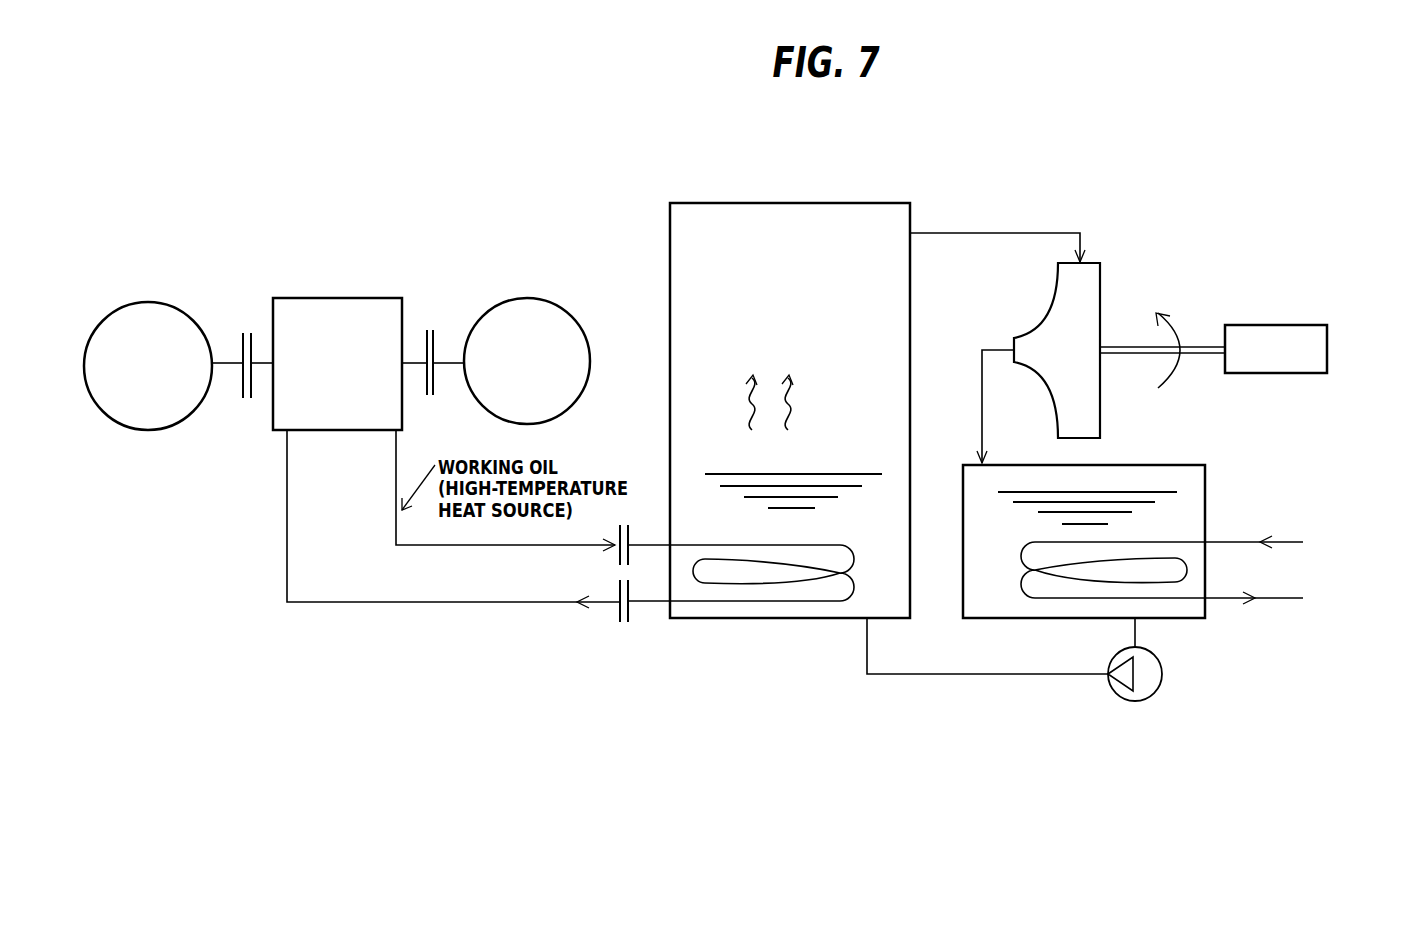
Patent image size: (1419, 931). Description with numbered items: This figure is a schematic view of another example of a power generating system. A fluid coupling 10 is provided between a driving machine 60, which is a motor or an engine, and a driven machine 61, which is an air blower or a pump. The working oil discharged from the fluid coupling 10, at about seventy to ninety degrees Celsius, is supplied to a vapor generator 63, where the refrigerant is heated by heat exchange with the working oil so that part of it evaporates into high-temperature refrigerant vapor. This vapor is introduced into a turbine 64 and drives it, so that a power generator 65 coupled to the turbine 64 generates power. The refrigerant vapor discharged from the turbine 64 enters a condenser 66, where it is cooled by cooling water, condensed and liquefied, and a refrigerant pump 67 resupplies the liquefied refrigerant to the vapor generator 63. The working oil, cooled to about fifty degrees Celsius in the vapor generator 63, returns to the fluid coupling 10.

The fluid coupling 10 is at (340, 297).
The driving machine 60 is at (527, 293).
The driven machine 61 is at (165, 432).
The vapor generator 63 is at (760, 203).
The turbine 64 is at (1100, 283).
The power generator 65 is at (1327, 350).
The condenser 66 is at (1205, 498).
The refrigerant pump 67 is at (1162, 678).